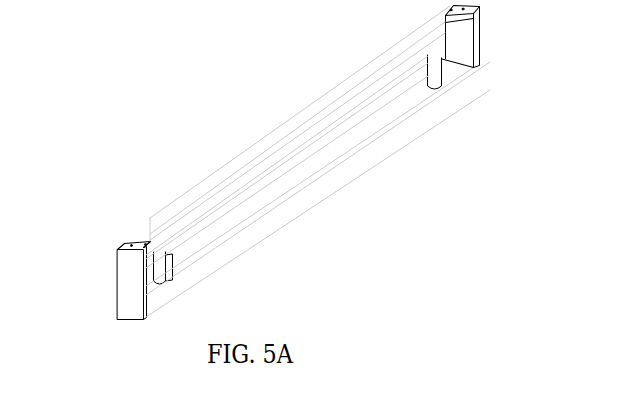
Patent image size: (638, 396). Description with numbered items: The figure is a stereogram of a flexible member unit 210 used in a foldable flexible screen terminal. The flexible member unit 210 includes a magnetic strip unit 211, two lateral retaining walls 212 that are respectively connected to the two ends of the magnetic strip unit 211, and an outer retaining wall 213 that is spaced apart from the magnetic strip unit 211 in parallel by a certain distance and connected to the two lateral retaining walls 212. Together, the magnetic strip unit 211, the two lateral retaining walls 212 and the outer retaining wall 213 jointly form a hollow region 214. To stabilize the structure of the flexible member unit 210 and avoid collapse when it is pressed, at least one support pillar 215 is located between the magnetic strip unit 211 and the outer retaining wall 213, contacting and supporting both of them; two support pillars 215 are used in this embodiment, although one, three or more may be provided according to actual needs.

The flexible member unit 210 is at (262, 166).
The magnetic strip unit 211 is at (157, 230).
The lateral retaining walls 212 is at (125, 265).
The outer retaining wall 213 is at (313, 172).
The hollow region 214 is at (342, 135).
The support pillar 215 is at (167, 272).